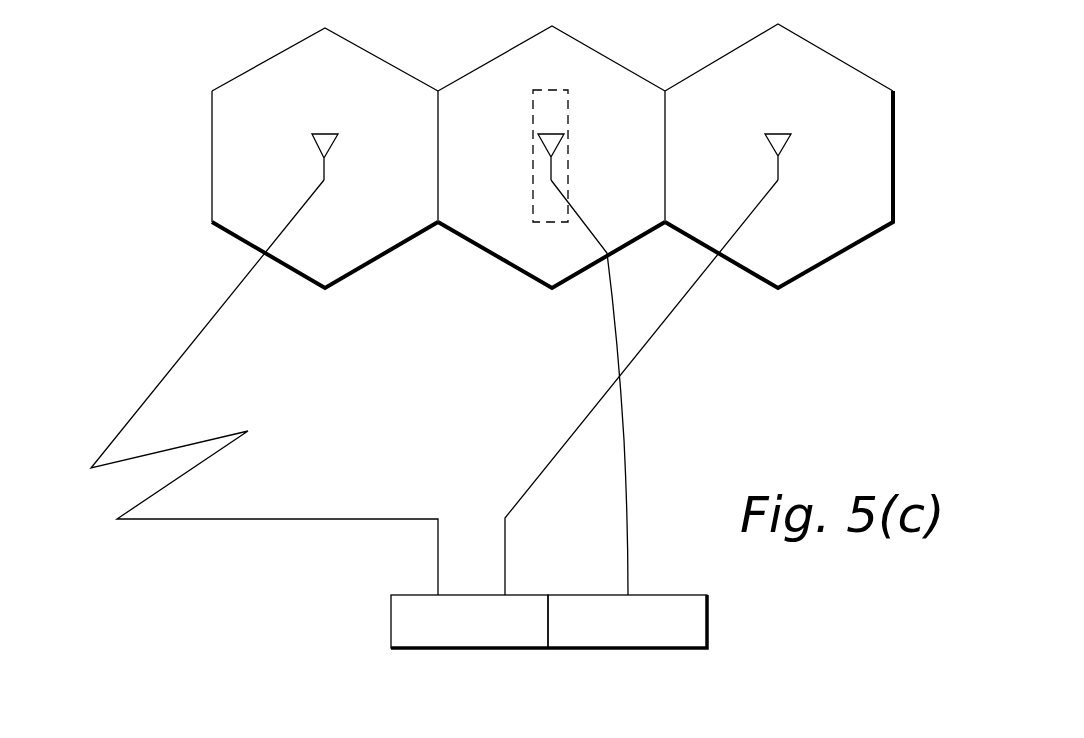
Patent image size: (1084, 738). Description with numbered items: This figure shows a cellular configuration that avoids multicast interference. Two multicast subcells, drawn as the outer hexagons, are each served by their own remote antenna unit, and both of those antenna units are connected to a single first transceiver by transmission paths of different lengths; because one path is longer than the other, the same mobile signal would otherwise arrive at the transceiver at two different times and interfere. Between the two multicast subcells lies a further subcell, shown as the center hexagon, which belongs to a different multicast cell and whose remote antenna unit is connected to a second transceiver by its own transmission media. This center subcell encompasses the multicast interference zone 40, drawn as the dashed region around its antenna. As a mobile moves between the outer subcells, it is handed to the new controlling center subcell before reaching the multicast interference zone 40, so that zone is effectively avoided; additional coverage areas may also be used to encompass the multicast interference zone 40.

The multicast interference zone 40 is at (532, 140).